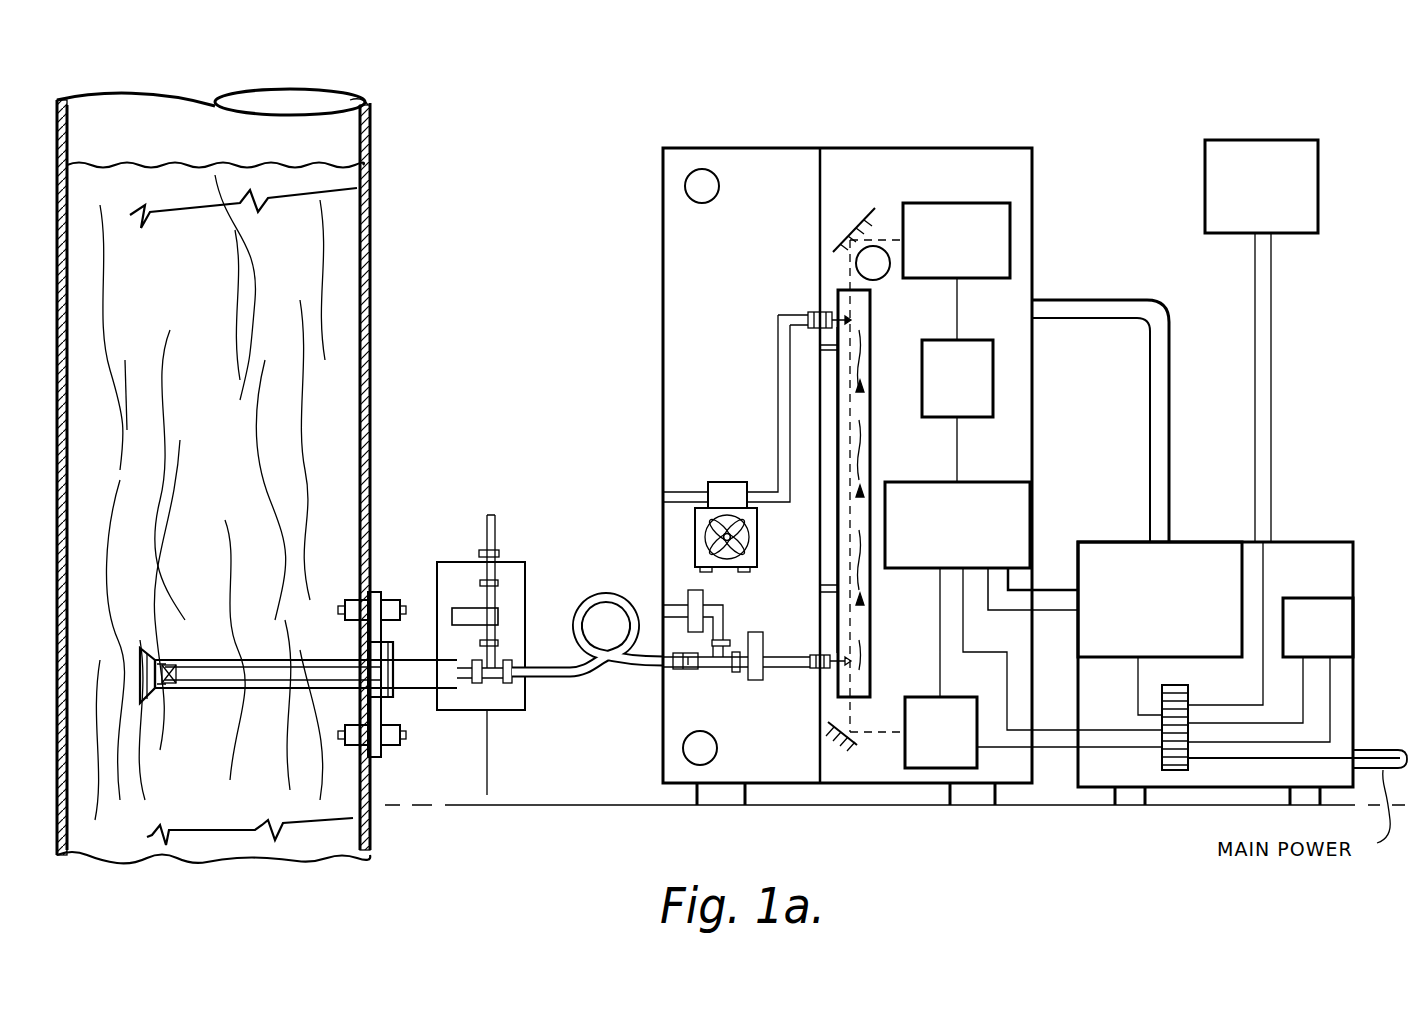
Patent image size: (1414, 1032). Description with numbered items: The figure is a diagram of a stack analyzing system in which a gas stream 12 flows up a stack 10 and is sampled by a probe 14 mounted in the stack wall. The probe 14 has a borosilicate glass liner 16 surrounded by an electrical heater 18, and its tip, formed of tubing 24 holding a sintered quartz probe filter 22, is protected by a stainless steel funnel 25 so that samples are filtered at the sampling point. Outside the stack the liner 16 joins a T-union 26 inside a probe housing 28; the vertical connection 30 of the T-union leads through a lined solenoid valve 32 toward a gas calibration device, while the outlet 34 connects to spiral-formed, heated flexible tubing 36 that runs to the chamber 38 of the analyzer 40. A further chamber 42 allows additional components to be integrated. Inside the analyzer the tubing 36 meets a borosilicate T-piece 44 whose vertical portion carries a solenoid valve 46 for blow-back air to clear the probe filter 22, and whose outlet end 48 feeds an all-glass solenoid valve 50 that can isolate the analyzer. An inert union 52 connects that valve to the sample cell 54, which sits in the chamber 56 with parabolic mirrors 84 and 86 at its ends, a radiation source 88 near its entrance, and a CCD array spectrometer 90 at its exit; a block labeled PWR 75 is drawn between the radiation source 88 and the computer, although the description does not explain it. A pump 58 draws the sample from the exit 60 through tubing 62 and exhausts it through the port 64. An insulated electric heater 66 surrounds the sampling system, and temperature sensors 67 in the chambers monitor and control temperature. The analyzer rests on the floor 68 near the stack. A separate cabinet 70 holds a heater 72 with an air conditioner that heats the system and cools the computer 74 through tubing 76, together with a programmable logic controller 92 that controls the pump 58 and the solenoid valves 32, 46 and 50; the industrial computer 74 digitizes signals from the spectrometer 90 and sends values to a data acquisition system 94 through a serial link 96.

The stack 10 is at (370, 300).
The gas stream 12 is at (172, 412).
The probe 14 is at (222, 660).
The borosilicate glass liner 16 is at (266, 680).
The electrical heater 18 is at (268, 660).
The probe filter 22 is at (175, 662).
The tubing 24 is at (170, 690).
The stainless steel funnel 25 is at (150, 705).
The T-union 26 is at (488, 682).
The probe housing 28 is at (508, 568).
The vertical connection 30 is at (508, 652).
The solenoid valve 32 is at (460, 608).
The outlet 34 is at (525, 680).
The flexible tubing 36 is at (605, 596).
The chamber 38 is at (668, 725).
The analyzer 40 is at (658, 297).
The chamber 42 is at (680, 232).
The T-piece 44 is at (712, 672).
The solenoid valve 46 is at (700, 612).
The outlet end 48 is at (740, 680).
The solenoid valve 50 is at (760, 680).
The inert union 52 is at (795, 652).
The sample cell 54 is at (872, 460).
The chamber 56 is at (920, 165).
The pump 58 is at (757, 545).
The exit 60 is at (815, 315).
The tubing 62 is at (780, 375).
The port 64 is at (663, 492).
The electric heater 66 is at (1169, 382).
The temperature sensors 67 is at (714, 198).
The floor 68 is at (560, 800).
The cabinet 70 is at (1311, 540).
The heater 72 is at (1192, 542).
The computer 74 is at (976, 482).
The power supply 75 is at (971, 340).
The tubing 76 is at (1060, 590).
The parabolic mirror 84 is at (875, 208).
The parabolic mirror 86 is at (857, 745).
The radiation source 88 is at (952, 203).
The CCD array spectrometer 90 is at (930, 697).
The programmable logic controller 92 is at (1320, 598).
The data acquisition system 94 is at (1235, 140).
The serial link 96 is at (1263, 670).